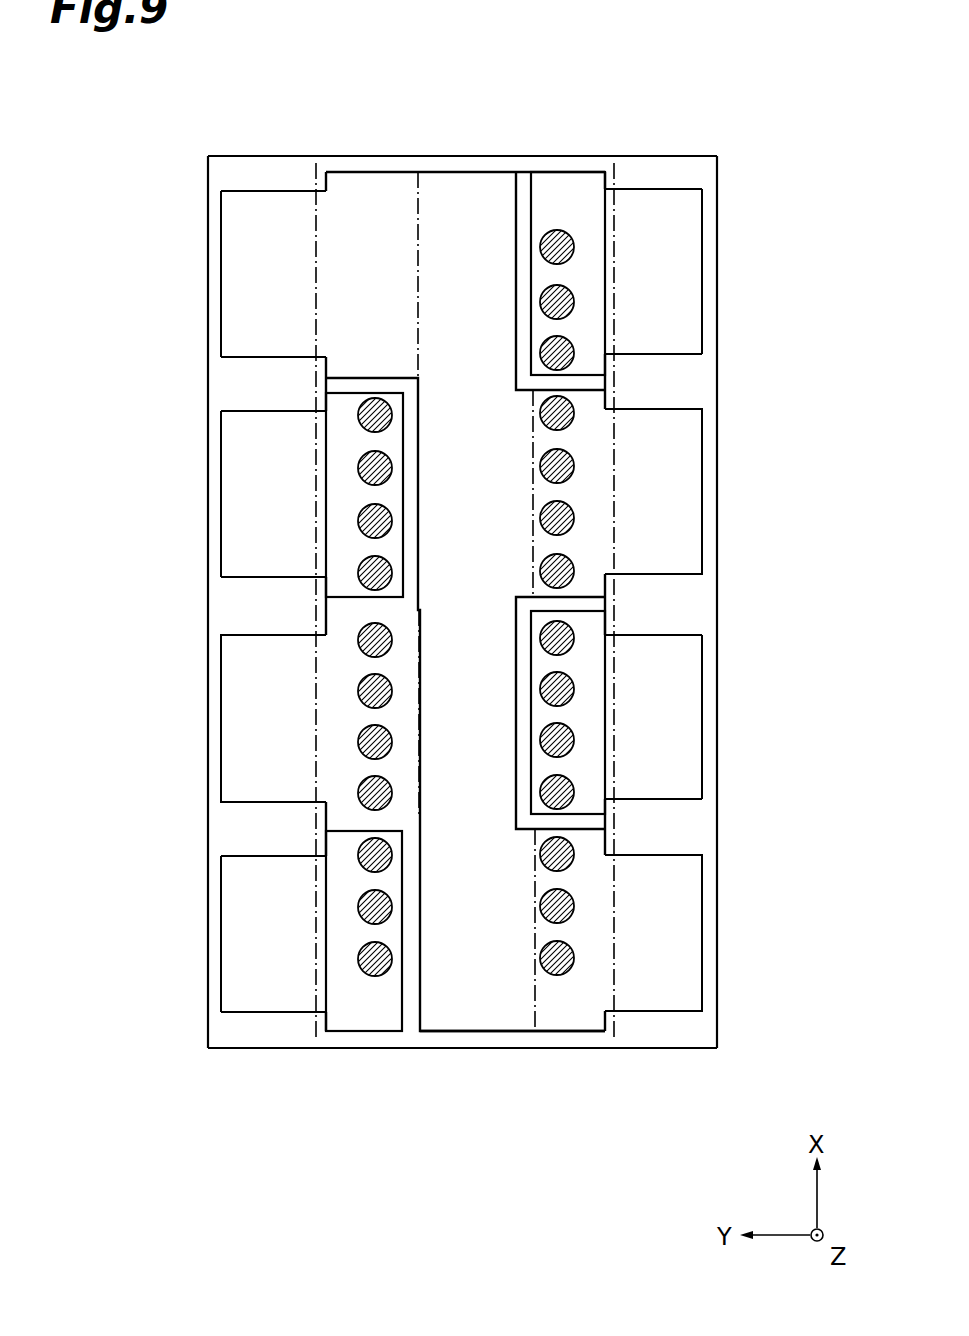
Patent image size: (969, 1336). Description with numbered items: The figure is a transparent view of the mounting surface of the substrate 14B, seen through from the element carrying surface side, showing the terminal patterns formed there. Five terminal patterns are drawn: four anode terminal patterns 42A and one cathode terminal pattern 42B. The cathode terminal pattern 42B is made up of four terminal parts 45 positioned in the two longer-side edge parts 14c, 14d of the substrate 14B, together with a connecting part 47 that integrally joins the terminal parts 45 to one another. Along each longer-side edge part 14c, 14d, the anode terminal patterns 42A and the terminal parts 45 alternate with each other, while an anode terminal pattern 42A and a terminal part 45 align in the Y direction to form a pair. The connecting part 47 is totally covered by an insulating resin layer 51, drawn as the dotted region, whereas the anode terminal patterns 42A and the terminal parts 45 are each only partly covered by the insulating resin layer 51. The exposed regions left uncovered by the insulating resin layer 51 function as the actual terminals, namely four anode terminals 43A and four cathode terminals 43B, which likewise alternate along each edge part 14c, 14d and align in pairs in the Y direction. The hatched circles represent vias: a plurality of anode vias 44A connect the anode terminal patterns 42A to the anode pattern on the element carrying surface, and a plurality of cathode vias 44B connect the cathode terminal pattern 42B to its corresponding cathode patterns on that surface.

The substrate 14B is at (766, 156).
The longer-side edge part 14c is at (719, 1001).
The longer-side edge part 14d is at (208, 1006).
The anode terminal pattern 42A is at (218, 437).
The cathode terminal pattern 42B is at (216, 205).
The anode terminal 43A is at (240, 492).
The cathode terminal 43B is at (234, 262).
The anode via 44A is at (574, 247).
The cathode via 44B is at (574, 413).
The terminal part 45 is at (325, 305).
The connecting part 47 is at (467, 1007).
The insulating resin layer 51 is at (440, 1017).